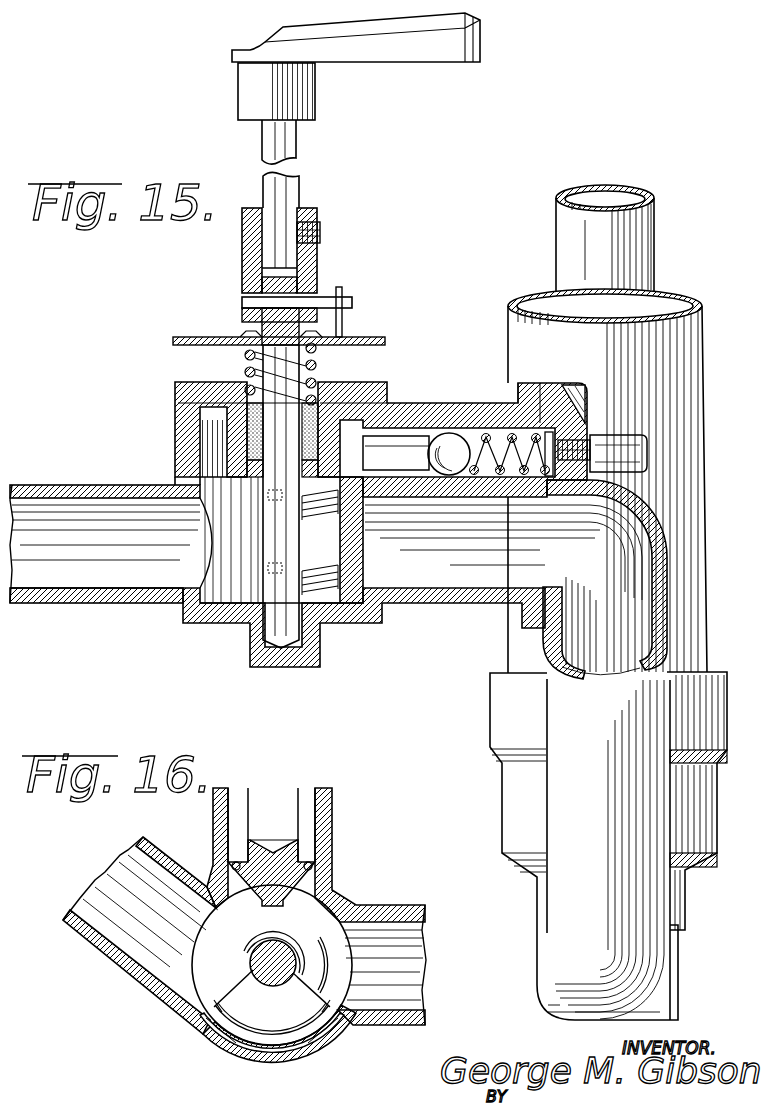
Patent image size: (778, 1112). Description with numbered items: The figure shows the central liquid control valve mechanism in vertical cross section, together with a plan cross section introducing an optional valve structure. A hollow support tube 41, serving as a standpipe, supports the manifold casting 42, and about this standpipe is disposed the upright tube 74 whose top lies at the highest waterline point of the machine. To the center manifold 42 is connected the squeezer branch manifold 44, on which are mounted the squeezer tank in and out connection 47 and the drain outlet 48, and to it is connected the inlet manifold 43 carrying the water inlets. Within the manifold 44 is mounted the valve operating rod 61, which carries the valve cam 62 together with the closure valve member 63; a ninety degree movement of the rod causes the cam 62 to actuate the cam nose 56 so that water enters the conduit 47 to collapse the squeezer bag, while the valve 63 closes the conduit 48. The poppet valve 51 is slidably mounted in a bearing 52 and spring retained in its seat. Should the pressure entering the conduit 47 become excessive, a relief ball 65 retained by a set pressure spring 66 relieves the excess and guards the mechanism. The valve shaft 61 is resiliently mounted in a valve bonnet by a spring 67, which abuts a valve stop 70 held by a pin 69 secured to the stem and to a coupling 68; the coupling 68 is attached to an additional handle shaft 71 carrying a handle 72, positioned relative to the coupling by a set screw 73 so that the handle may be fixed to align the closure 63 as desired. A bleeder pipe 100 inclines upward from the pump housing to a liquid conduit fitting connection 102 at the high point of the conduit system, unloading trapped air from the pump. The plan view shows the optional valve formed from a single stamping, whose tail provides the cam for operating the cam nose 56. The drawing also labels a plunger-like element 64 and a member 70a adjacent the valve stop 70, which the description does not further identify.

In FIG. 15, the handle 72 is at (398, 62).
In FIG. 15, the additional handle shaft 71 is at (299, 186).
In FIG. 15, the set screw 73 is at (320, 230).
In FIG. 15, the coupling 68 is at (309, 243).
In FIG. 15, the pin 69 is at (352, 301).
In FIG. 15, the pin 70a is at (343, 318).
In FIG. 15, the valve stop 70 is at (385, 341).
In FIG. 15, the spring 67 is at (318, 367).
In FIG. 15, the squeezer branch manifold 44 is at (175, 440).
In FIG. 15, the squeezer tank in and out connection 47 is at (72, 497).
In FIG. 16, the squeezer tank in and out connection 47 is at (128, 964).
In FIG. 15, the closure valve member 63 is at (368, 553).
In FIG. 16, the closure valve member 63 is at (222, 1038).
In FIG. 15, the plunger 64 is at (400, 468).
In FIG. 15, the ball 65 is at (442, 432).
In FIG. 15, the set pressure spring 66 is at (493, 432).
In FIG. 15, the bleeder pipe 100 is at (610, 433).
In FIG. 15, the liquid conduit fitting connection 102 is at (577, 392).
In FIG. 15, the hollow support tube 41 is at (700, 395).
In FIG. 15, the upright tube 74 is at (654, 257).
In FIG. 15, the manifold casting 42 is at (508, 818).
In FIG. 15, the drain outlet 48 is at (572, 905).
In FIG. 15, the valve operating rod 61 is at (278, 553).
In FIG. 16, the valve operating rod 61 is at (262, 958).
In FIG. 16, the inlet manifold 43 is at (327, 828).
In FIG. 16, the bearing 52 is at (232, 790).
In FIG. 16, the poppet valve 51 is at (303, 790).
In FIG. 16, the cam nose 56 is at (263, 900).
In FIG. 16, the valve cam 62 is at (340, 953).